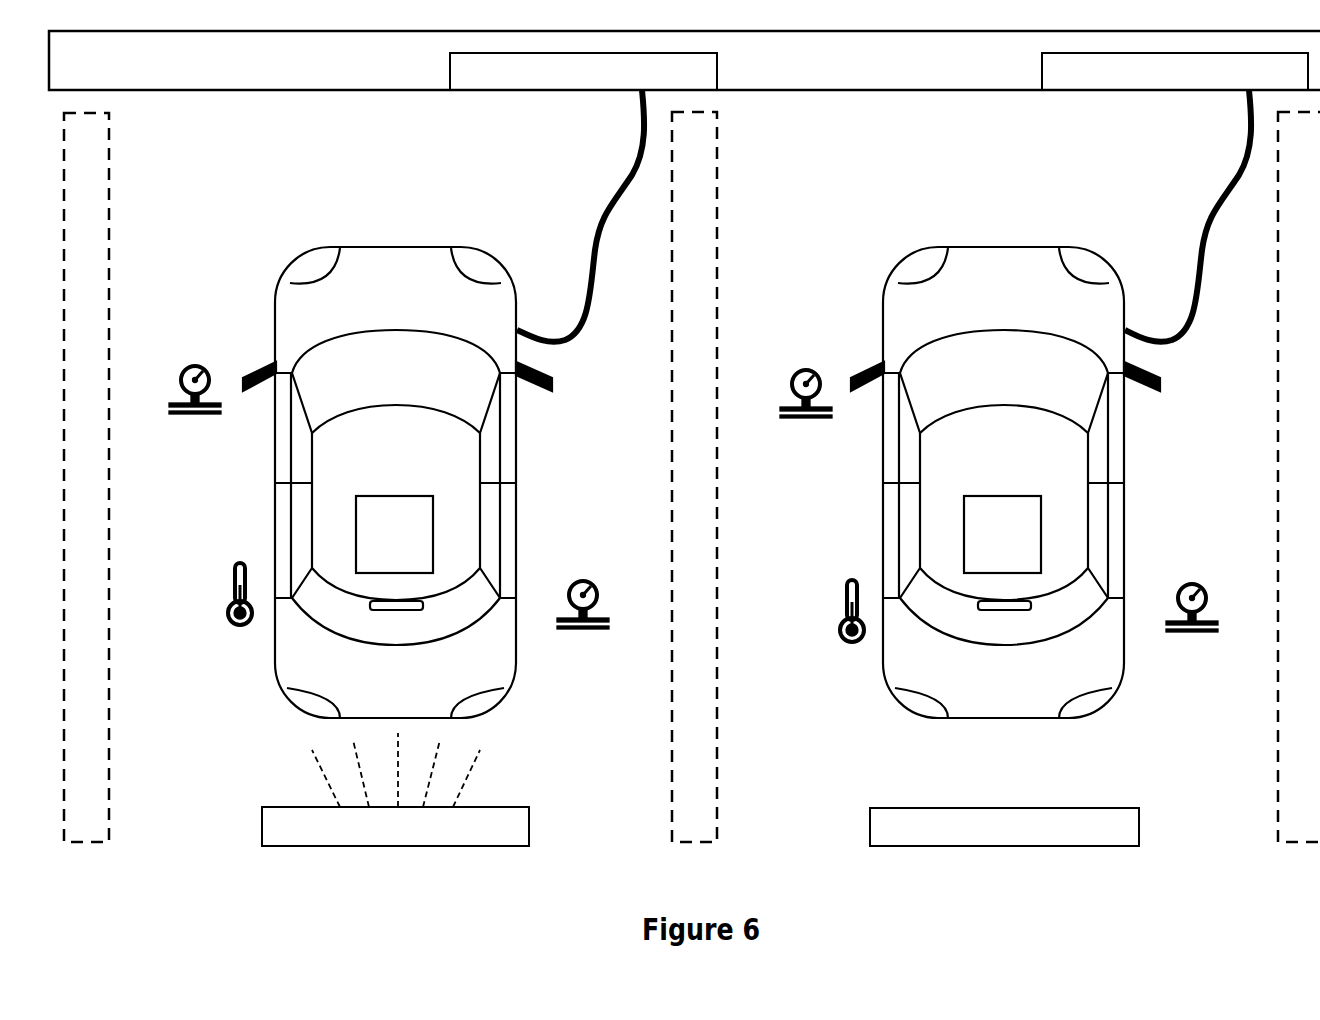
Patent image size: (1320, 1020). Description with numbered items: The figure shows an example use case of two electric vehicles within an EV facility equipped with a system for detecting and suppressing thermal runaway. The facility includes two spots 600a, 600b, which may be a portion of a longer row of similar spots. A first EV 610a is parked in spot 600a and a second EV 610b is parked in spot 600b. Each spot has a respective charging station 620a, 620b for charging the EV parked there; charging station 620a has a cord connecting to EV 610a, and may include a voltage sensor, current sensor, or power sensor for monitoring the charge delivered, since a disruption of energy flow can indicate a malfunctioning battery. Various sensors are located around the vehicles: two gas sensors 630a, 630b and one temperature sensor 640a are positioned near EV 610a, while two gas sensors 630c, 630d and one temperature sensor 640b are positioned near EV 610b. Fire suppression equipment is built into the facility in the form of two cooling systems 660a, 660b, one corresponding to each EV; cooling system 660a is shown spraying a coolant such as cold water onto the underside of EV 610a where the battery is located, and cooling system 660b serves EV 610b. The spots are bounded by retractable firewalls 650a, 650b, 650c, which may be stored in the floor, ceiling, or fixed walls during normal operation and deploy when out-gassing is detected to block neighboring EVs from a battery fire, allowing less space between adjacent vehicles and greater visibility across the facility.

The spot 600a is at (213, 845).
The spot 600b is at (1217, 850).
The EV 610a is at (397, 482).
The EV 610b is at (1005, 482).
The charging station 620a is at (583, 197).
The charging station 620b is at (1175, 197).
The gas sensor 630a is at (202, 352).
The gas sensor 630b is at (583, 641).
The gas sensor 630c is at (810, 355).
The gas sensor 630d is at (1192, 642).
The temperature sensor 640a is at (240, 550).
The temperature sensor 640b is at (852, 565).
The retractable firewall 650a is at (109, 700).
The retractable firewall 650b is at (717, 733).
The retractable firewall 650c is at (1278, 723).
The cooling system 660a is at (395, 789).
The cooling system 660b is at (1004, 827).